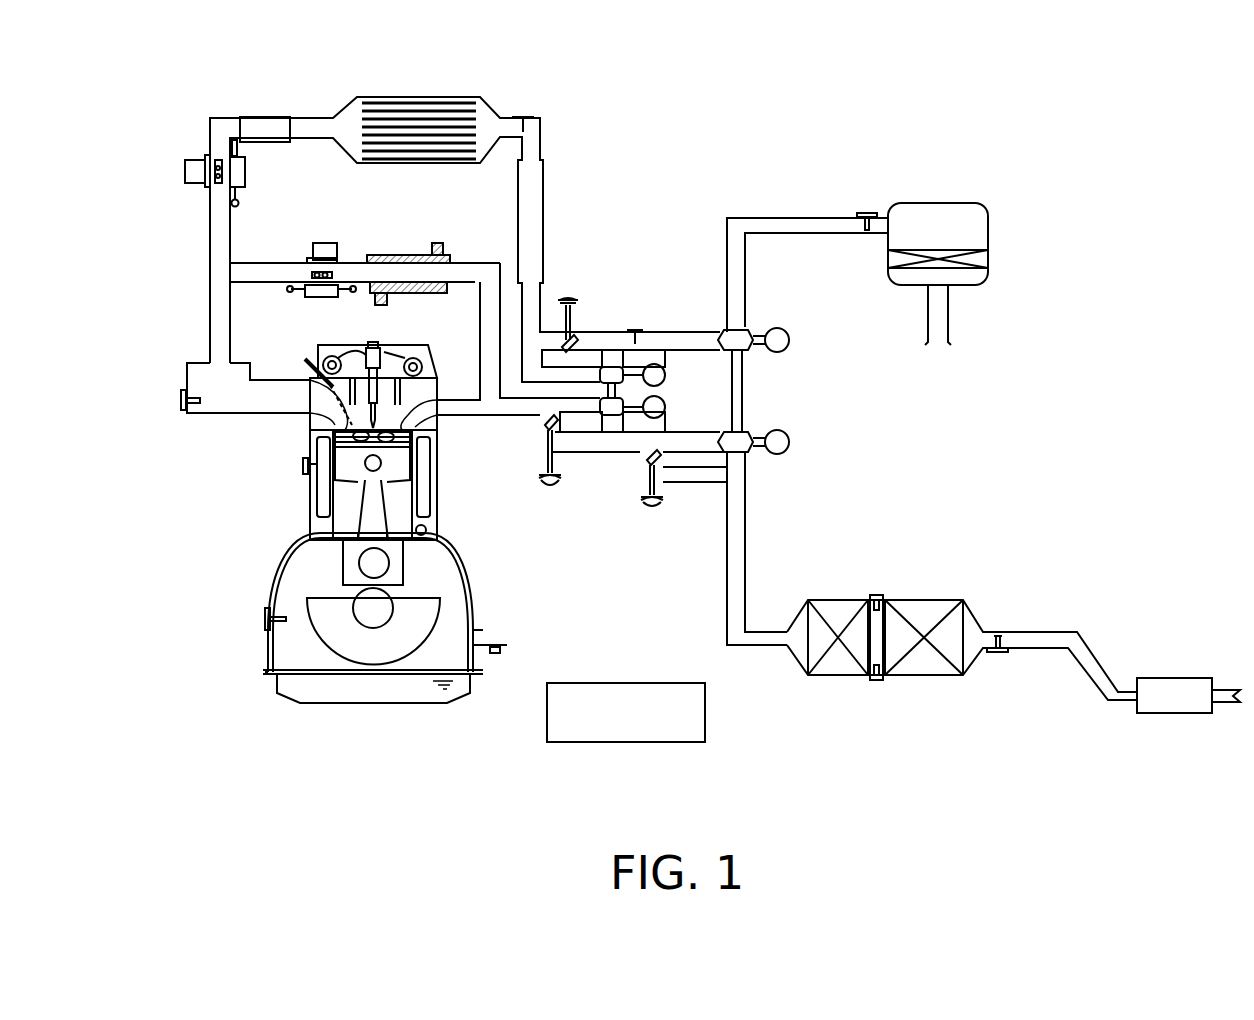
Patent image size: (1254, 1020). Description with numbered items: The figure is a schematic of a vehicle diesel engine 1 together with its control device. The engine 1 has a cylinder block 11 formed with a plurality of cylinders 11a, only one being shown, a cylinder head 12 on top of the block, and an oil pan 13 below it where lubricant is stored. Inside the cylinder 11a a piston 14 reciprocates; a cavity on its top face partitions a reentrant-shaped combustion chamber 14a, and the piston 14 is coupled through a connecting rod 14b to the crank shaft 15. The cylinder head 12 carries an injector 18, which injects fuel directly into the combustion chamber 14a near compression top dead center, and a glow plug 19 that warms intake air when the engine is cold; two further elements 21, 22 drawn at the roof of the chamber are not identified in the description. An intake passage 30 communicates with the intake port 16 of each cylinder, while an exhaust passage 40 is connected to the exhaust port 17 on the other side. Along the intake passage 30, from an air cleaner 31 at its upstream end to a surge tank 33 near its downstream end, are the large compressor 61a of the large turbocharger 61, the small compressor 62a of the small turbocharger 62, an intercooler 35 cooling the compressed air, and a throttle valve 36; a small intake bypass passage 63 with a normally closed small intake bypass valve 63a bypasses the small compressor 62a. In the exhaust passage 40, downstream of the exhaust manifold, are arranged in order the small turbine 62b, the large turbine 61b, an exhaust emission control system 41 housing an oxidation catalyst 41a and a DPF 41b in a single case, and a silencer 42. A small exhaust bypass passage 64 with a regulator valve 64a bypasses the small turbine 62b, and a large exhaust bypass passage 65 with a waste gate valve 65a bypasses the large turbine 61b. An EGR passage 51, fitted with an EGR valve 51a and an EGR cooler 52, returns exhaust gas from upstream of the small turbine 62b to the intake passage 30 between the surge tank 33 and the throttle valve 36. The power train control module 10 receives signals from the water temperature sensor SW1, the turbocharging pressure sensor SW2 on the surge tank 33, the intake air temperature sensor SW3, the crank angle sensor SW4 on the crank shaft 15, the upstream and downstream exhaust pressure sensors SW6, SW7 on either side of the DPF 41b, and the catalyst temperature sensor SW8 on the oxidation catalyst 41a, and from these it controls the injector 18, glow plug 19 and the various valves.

The engine 1 is at (212, 680).
The power train control module 10 is at (580, 748).
The cylinder block 11 is at (440, 491).
The cylinder 11a is at (428, 529).
The cylinder head 12 is at (447, 382).
The oil pan 13 is at (382, 706).
The piston 14 is at (322, 498).
The combustion chamber 14a is at (408, 452).
The connecting rod 14b is at (330, 520).
The crank shaft 15 is at (362, 615).
The intake port 16 is at (330, 395).
The exhaust port 17 is at (441, 402).
The injector 18 is at (372, 342).
The glow plug 19 is at (328, 352).
The intake valve 21 is at (352, 437).
The exhaust valve 22 is at (396, 438).
The intake passage 30 is at (208, 294).
The air cleaner 31 is at (953, 203).
The surge tank 33 is at (208, 414).
The intercooler 35 is at (413, 97).
The throttle valve 36 is at (215, 160).
The exhaust passage 40 is at (727, 602).
The exhaust emission control system 41 is at (945, 525).
The oxidation catalyst 41a is at (838, 598).
The DPF 41b is at (920, 598).
The silencer 42 is at (1178, 678).
The EGR passage 51 is at (410, 290).
The EGR valve 51a is at (335, 275).
The EGR cooler 52 is at (411, 255).
The large turbocharger 61 is at (866, 358).
The large compressor 61a is at (756, 344).
The large turbine 61b is at (756, 440).
The small turbocharger 62 is at (740, 185).
The small compressor 62a is at (625, 372).
The small turbine 62b is at (653, 397).
The small intake bypass passage 63 is at (603, 342).
The small intake bypass valve 63a is at (578, 335).
The small exhaust bypass passage 64 is at (573, 447).
The regulator valve 64a is at (544, 438).
The large exhaust bypass passage 65 is at (684, 484).
The waste gate valve 65a is at (648, 462).
The water temperature sensor SW1 is at (300, 466).
The turbocharging pressure sensor SW2 is at (180, 401).
The intake air temperature sensor SW3 is at (868, 212).
The crank angle sensor SW4 is at (264, 618).
The upstream exhaust pressure sensor SW6 is at (877, 681).
The downstream exhaust pressure sensor SW7 is at (998, 654).
The catalyst temperature sensor SW8 is at (878, 595).